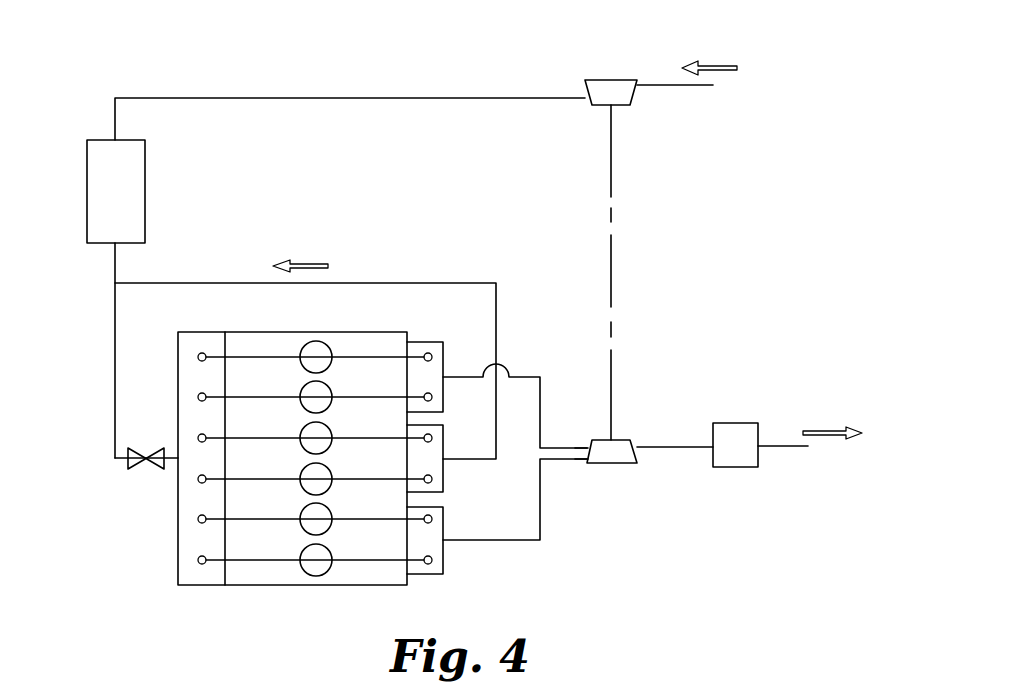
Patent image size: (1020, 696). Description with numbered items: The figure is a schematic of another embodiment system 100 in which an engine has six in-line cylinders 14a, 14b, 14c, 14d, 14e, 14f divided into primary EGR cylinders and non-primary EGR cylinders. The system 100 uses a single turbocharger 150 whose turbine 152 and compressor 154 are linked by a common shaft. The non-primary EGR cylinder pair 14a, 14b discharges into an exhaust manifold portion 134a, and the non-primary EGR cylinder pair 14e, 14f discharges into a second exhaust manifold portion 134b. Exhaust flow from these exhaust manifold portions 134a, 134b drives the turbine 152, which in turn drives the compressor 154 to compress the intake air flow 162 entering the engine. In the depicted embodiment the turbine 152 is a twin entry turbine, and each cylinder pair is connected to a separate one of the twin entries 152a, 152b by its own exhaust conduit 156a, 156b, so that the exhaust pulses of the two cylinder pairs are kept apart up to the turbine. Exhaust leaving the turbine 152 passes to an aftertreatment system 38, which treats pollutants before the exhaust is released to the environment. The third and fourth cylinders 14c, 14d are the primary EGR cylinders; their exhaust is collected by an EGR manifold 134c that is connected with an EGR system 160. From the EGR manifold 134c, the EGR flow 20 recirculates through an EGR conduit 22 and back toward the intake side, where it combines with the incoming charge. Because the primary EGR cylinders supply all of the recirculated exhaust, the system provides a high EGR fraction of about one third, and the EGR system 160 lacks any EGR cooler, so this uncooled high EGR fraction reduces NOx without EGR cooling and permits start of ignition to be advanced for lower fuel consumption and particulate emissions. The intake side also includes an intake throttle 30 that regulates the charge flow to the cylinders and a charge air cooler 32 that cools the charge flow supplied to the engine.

The system 100 is at (848, 117).
The compressor 154 is at (600, 80).
The intake air flow 162 is at (704, 64).
The charge air cooler 32 is at (97, 177).
The EGR system 160 is at (200, 264).
The EGR flow 20 is at (307, 262).
The EGR conduit 22 is at (393, 282).
The intake throttle 30 is at (143, 472).
The turbocharger 150 is at (644, 221).
The cylinder 14a is at (328, 365).
The cylinder 14b is at (301, 388).
The cylinder 14c is at (329, 447).
The cylinder 14d is at (303, 470).
The cylinder 14e is at (329, 529).
The cylinder 14f is at (302, 552).
The exhaust manifold portion 134a is at (448, 356).
The exhaust manifold portion 134b is at (447, 565).
The EGR manifold 134c is at (446, 470).
The exhaust conduit 156a is at (546, 390).
The exhaust conduit 156b is at (542, 524).
The turbine 152 is at (630, 468).
The twin entry 152a is at (577, 446).
The twin entry 152b is at (577, 464).
The aftertreatment system 38 is at (735, 437).